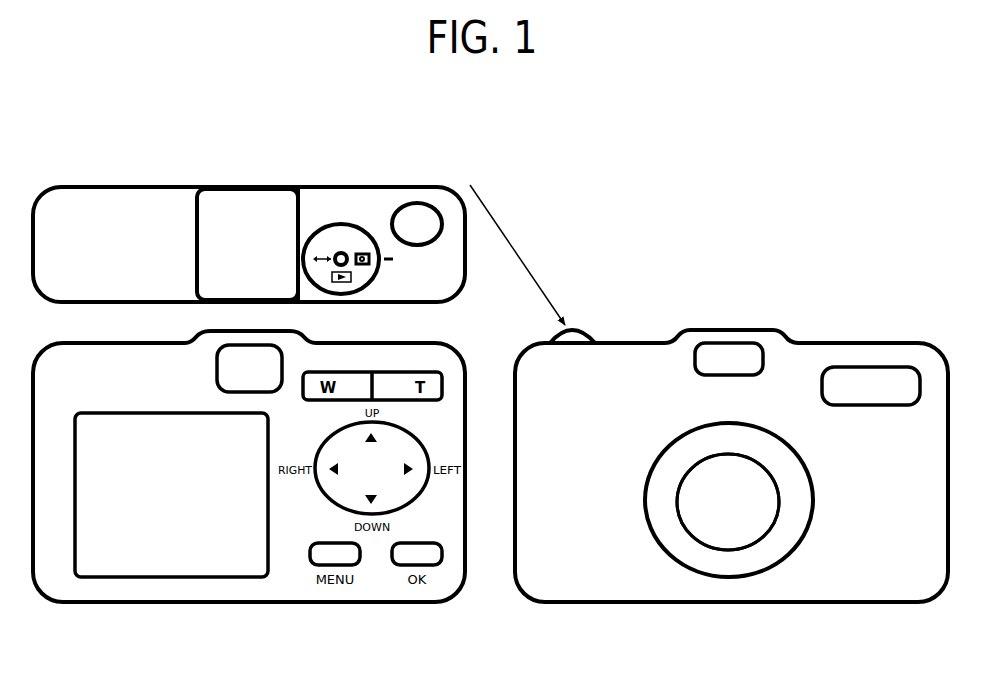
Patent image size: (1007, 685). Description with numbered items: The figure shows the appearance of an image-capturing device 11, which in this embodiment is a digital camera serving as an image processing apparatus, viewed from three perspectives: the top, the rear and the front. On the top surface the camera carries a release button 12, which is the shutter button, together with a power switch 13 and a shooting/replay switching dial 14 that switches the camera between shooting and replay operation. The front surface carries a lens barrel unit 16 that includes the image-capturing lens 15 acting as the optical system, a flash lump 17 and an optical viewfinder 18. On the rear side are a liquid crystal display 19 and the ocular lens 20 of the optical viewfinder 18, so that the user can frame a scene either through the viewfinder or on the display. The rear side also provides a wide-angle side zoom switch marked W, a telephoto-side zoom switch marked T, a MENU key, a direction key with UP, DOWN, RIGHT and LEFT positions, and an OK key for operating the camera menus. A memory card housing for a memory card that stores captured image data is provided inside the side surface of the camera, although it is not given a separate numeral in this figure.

The image-capturing device 11 is at (640, 144).
The release button 12 is at (420, 205).
The power switch 13 is at (338, 249).
The shooting/replay switching dial 14 is at (366, 240).
The image-capturing lens 15 is at (706, 550).
The lens barrel unit 16 is at (670, 560).
The flash lump 17 is at (850, 358).
The optical viewfinder 18 is at (212, 362).
The liquid crystal display 19 is at (185, 578).
The ocular lens 20 is at (728, 550).